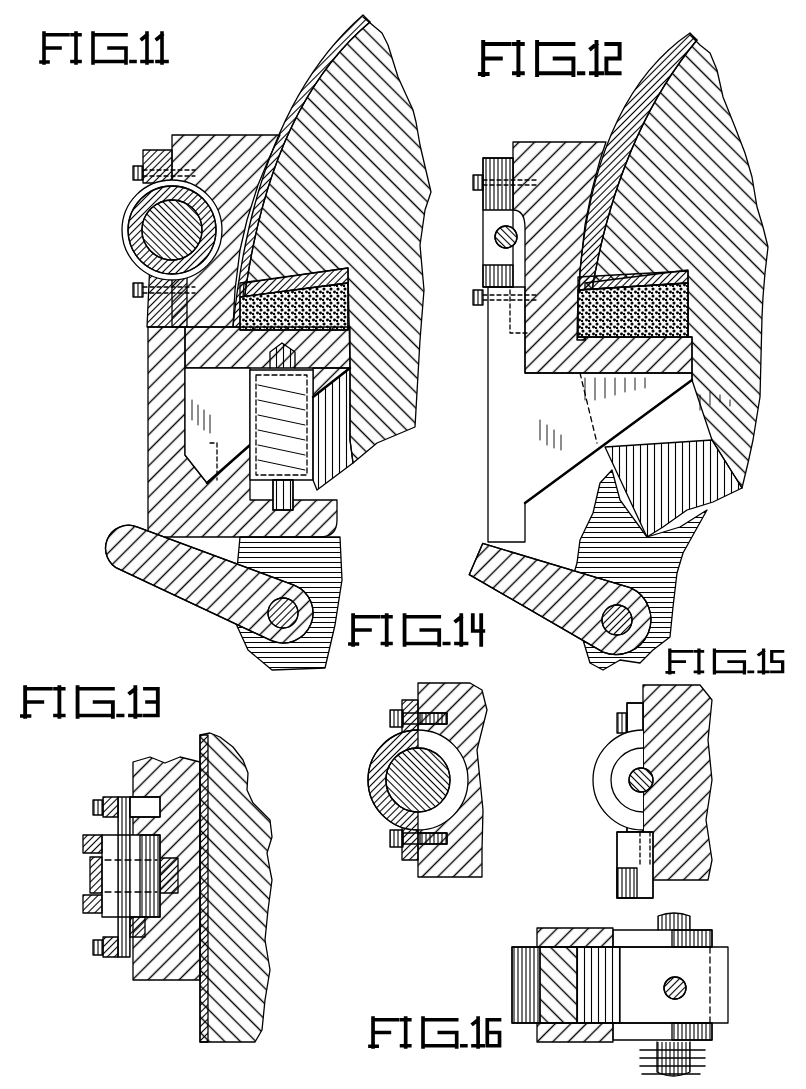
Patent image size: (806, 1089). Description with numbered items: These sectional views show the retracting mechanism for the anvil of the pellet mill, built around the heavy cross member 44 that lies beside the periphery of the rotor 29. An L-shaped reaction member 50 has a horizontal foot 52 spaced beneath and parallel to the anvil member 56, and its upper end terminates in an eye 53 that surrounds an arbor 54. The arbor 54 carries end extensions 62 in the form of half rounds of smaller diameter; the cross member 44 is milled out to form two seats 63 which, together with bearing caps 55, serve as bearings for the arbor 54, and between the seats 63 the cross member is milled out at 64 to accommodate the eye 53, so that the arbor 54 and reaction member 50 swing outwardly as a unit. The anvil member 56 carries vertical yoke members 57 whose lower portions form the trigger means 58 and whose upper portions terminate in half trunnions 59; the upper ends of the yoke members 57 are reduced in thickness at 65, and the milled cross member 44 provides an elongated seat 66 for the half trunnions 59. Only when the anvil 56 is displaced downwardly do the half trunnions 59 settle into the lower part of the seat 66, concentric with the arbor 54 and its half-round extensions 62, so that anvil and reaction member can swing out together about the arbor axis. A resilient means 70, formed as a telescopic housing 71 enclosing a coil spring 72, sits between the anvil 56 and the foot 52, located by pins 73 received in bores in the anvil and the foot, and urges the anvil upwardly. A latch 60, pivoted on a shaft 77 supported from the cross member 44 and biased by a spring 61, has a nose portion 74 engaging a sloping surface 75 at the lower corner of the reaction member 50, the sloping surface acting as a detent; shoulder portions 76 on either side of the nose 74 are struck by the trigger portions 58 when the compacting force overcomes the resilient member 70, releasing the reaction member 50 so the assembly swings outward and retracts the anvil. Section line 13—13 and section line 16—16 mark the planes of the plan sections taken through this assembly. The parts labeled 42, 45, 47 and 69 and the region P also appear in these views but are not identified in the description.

In FIG. 11, the section line 13— 13 is at (84, 240).
In FIG. 11, the section line 16— 16 is at (140, 442).
In FIG. 11, the rotor 29 is at (390, 95).
In FIG. 12, the rotor 29 is at (713, 112).
In FIG. 13, the rotor 29 is at (258, 934).
In FIG. 12, the lip of blade 42 is at (663, 277).
In FIG. 11, the cross member 44 is at (226, 138).
In FIG. 12, the cross member 44 is at (575, 128).
In FIG. 13, the cross member 44 is at (166, 868).
In FIG. 14, the cross member 44 is at (482, 700).
In FIG. 15, the cross member 44 is at (693, 733).
In FIG. 11, the cutting edge strip 45 is at (331, 53).
In FIG. 12, the cutting edge strip 45 is at (637, 186).
In FIG. 13, the cutting edge strip 45 is at (202, 1020).
In FIG. 11, the backing bar 47 is at (320, 283).
In FIG. 12, the backing bar 47 is at (690, 283).
In FIG. 11, the reaction member 50 is at (160, 348).
In FIG. 16, the reaction member 50 is at (545, 985).
In FIG. 11, the horizontal foot 52 is at (335, 519).
In FIG. 16, the horizontal foot 52 is at (728, 1015).
In FIG. 11, the eye 53 is at (135, 248).
In FIG. 13, the eye 53 is at (90, 866).
In FIG. 11, the arbor 54 is at (150, 210).
In FIG. 13, the arbor 54 is at (125, 878).
In FIG. 14, the arbor 54 is at (397, 775).
In FIG. 15, the arbor 54 is at (620, 795).
In FIG. 11, the bearing caps 55 is at (130, 270).
In FIG. 13, the bearing caps 55 is at (83, 903).
In FIG. 14, the bearing caps 55 is at (382, 750).
In FIG. 15, the bearing caps 55 is at (612, 812).
In FIG. 11, the anvil member 56 is at (215, 363).
In FIG. 12, the anvil member 56 is at (565, 375).
In FIG. 11, the yoke members 57 is at (148, 374).
In FIG. 12, the yoke members 57 is at (487, 358).
In FIG. 15, the yoke members 57 is at (617, 885).
In FIG. 16, the yoke members 57 is at (537, 935).
In FIG. 12, the trigger means 58 is at (487, 540).
In FIG. 12, the half trunnions 59 is at (483, 210).
In FIG. 15, the half trunnions 59 is at (643, 760).
In FIG. 11, the latch 60 is at (215, 600).
In FIG. 12, the latch 60 is at (548, 607).
In FIG. 16, the latch 60 is at (636, 1035).
In FIG. 16, the spring 61 is at (700, 1060).
In FIG. 12, the end extensions 62 is at (495, 238).
In FIG. 13, the end extensions 62 is at (130, 925).
In FIG. 15, the end extensions 62 is at (630, 777).
In FIG. 13, the seats 63 is at (200, 842).
In FIG. 13, the milled-out portion 64 is at (200, 882).
In FIG. 12, the reduced upper ends 65 is at (505, 262).
In FIG. 13, the reduced upper ends 65 is at (103, 940).
In FIG. 15, the reduced upper ends 65 is at (643, 822).
In FIG. 12, the seat 66 is at (554, 250).
In FIG. 13, the seat 66 is at (133, 960).
In FIG. 11, the bolt 69 is at (135, 160).
In FIG. 12, the bolt 69 is at (490, 157).
In FIG. 13, the bolt 69 is at (103, 805).
In FIG. 11, the resilient means 70 is at (308, 407).
In FIG. 11, the telescopic housing 71 is at (308, 418).
In FIG. 11, the coil spring 72 is at (308, 438).
In FIG. 11, the pins 73 is at (273, 495).
In FIG. 16, the pins 73 is at (686, 988).
In FIG. 11, the nose portion 74 is at (125, 546).
In FIG. 16, the nose portion 74 is at (512, 963).
In FIG. 11, the sloping surface 75 is at (148, 530).
In FIG. 11, the shoulder portions 76 is at (125, 556).
In FIG. 12, the shoulder portions 76 is at (475, 557).
In FIG. 11, the shaft 77 is at (302, 605).
In FIG. 12, the shaft 77 is at (632, 618).
In FIG. 16, the shaft 77 is at (692, 920).
In FIG. 11, the pad P is at (345, 305).
In FIG. 12, the pad P is at (690, 310).